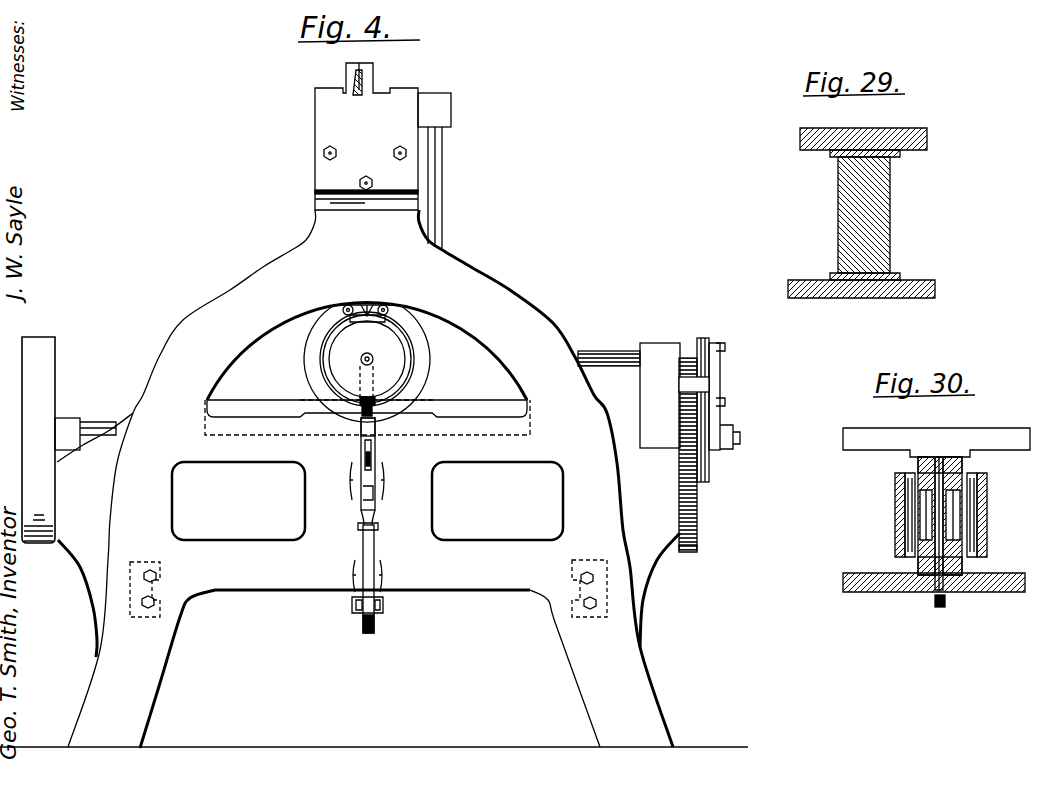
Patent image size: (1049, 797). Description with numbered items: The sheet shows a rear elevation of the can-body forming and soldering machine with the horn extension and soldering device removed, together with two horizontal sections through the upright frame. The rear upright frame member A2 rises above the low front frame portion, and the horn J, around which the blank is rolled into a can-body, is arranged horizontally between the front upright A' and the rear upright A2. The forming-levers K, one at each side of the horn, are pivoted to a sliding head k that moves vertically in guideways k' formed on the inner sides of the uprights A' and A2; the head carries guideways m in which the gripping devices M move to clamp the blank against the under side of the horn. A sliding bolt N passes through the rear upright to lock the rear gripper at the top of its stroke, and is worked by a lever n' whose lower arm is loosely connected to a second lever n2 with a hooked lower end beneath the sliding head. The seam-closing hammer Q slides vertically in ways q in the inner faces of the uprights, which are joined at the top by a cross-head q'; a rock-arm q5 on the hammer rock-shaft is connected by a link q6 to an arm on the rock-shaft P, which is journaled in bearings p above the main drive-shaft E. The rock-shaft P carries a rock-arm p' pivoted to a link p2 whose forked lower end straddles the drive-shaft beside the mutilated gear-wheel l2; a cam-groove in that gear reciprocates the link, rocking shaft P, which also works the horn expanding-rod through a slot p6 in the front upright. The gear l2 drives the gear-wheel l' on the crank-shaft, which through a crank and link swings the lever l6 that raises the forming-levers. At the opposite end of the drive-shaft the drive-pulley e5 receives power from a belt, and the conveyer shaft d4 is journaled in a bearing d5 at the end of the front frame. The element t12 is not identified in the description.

In FIG. 4, the rear upright frame member A2 is at (368, 479).
In FIG. 29, the rear upright frame member A2 is at (928, 284).
In FIG. 30, the rear upright frame member A2 is at (830, 578).
In FIG. 4, the cross-head q' is at (366, 136).
In FIG. 4, the pin t12 is at (350, 78).
In FIG. 4, the rock-arm q5 is at (437, 108).
In FIG. 4, the link q6 is at (442, 190).
In FIG. 4, the forming-levers K is at (298, 368).
In FIG. 30, the forming-levers K is at (895, 508).
In FIG. 4, the horn J is at (367, 363).
In FIG. 4, the slot p6 is at (374, 366).
In FIG. 4, the sliding bolt N is at (360, 428).
In FIG. 30, the sliding bolt N is at (940, 607).
In FIG. 4, the lever n' is at (378, 471).
In FIG. 4, the second lever n2 is at (375, 552).
In FIG. 4, the lever l6 is at (372, 628).
In FIG. 4, the drive-pulley e5 is at (38, 440).
In FIG. 4, the bearing d5 is at (69, 421).
In FIG. 4, the shaft d4 is at (104, 422).
In FIG. 4, the rock-shaft P is at (609, 346).
In FIG. 4, the bearings p is at (660, 395).
In FIG. 4, the rock-arm p' is at (706, 391).
In FIG. 4, the link p2 is at (720, 380).
In FIG. 4, the mutilated gear-wheel l2 is at (679, 430).
In FIG. 4, the main drive-shaft E is at (740, 438).
In FIG. 4, the mutilated gear-wheel l' is at (695, 534).
In FIG. 29, the front upright frame member A' is at (877, 142).
In FIG. 30, the front upright frame member A' is at (921, 442).
In FIG. 29, the ways q is at (865, 218).
In FIG. 29, the hammer Q is at (890, 207).
In FIG. 30, the gripping devices M is at (930, 457).
In FIG. 30, the guideways m is at (945, 457).
In FIG. 30, the guideways k' is at (918, 514).
In FIG. 30, the sliding head k is at (956, 507).